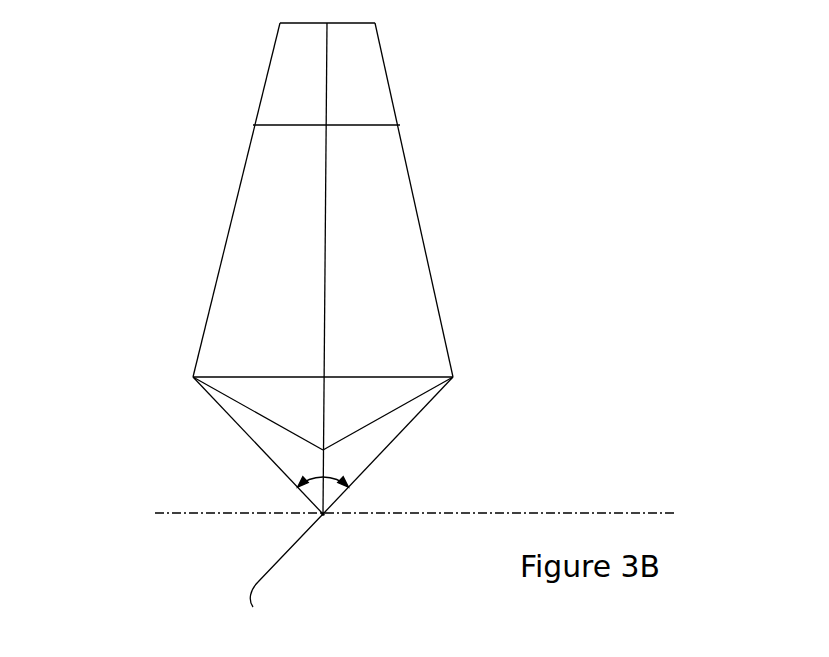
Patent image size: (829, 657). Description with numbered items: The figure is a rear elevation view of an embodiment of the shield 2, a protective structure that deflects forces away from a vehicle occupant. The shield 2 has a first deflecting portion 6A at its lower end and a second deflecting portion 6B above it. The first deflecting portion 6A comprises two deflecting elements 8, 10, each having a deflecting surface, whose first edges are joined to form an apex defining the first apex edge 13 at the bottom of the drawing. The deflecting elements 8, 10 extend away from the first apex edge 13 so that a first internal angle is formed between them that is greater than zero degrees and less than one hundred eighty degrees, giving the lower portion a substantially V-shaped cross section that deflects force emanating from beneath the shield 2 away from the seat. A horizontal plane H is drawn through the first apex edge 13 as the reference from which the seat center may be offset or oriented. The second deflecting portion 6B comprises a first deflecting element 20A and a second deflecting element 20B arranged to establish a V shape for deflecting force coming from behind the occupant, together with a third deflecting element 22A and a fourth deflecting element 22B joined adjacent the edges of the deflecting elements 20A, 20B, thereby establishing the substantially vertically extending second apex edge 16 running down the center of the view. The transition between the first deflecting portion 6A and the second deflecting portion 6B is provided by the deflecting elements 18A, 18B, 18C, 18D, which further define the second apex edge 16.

The shield 2 is at (558, 123).
The first deflecting portion 6A is at (212, 495).
The second deflecting portion 6B is at (171, 188).
The deflecting element 8 is at (242, 423).
The deflecting element 10 is at (417, 417).
The first apex edge 13 is at (322, 520).
The second apex edge 16 is at (327, 55).
The deflecting element 18A is at (362, 456).
The deflecting element 18B is at (292, 456).
The deflecting element 18C is at (407, 382).
The deflecting element 18D is at (237, 383).
The first deflecting element 20A is at (233, 306).
The second deflecting element 20B is at (418, 300).
The third deflecting element 22A is at (287, 83).
The fourth deflecting element 22B is at (368, 96).
The horizontal plane H is at (628, 513).